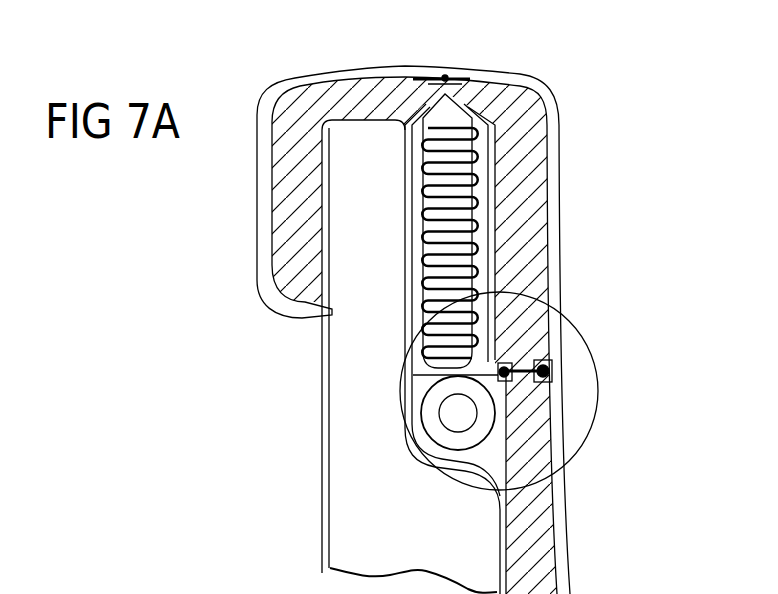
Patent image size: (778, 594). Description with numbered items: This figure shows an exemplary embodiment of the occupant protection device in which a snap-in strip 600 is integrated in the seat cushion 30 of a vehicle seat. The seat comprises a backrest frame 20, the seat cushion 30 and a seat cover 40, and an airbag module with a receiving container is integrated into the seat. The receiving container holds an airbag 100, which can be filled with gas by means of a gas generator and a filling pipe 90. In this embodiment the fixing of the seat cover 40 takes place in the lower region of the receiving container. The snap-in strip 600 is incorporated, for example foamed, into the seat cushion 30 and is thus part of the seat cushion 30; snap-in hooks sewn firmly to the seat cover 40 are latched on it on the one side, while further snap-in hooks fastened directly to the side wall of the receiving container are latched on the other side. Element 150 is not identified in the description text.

The backrest frame 20 is at (357, 262).
The seat cushion 30 is at (525, 220).
The seat cover 40 is at (558, 157).
The filling pipe 90 is at (425, 443).
The airbag 100 is at (423, 273).
The contact element 150 is at (442, 70).
The snap-in strip 600 is at (522, 383).